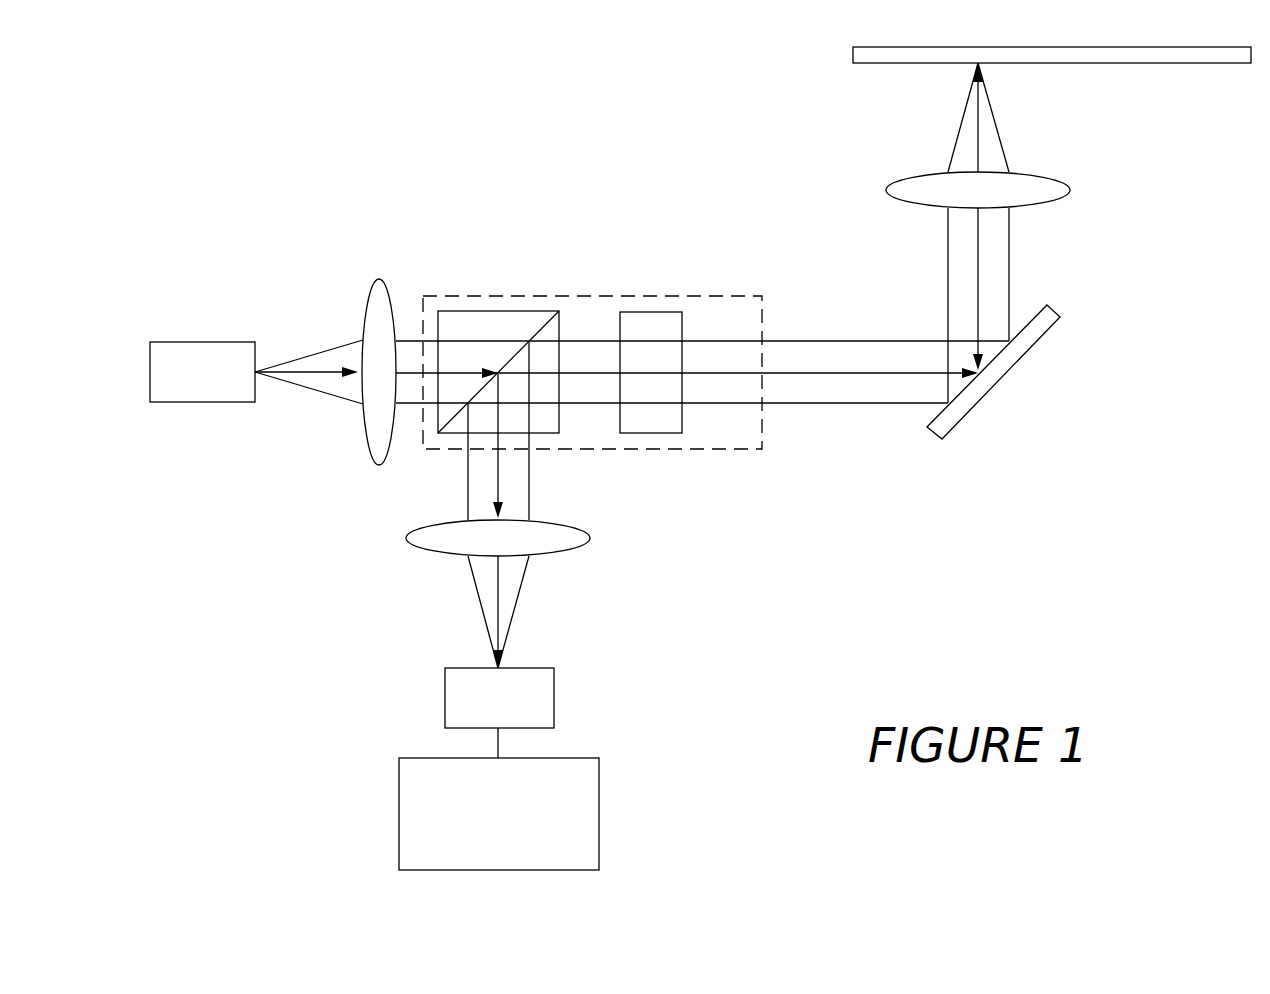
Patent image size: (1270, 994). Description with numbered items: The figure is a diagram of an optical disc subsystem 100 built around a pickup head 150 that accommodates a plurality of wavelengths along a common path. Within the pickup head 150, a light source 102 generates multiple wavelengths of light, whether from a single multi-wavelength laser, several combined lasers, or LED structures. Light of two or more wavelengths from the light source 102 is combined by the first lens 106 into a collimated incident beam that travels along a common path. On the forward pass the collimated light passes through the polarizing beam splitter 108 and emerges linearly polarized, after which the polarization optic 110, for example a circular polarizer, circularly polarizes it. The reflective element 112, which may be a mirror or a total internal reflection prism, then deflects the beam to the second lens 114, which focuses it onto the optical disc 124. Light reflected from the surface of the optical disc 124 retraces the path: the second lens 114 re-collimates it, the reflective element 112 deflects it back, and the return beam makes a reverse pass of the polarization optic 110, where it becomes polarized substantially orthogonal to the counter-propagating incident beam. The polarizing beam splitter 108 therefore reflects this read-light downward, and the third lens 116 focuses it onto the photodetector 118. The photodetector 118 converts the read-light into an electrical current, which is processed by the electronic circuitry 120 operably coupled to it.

The optical disc subsystem 100 is at (830, 566).
The light source 102 is at (206, 344).
The first lens 106 is at (405, 345).
The polarizing beam splitter 108 is at (503, 345).
The polarization optic 110 is at (670, 345).
The reflective element 112 is at (1023, 348).
The second lens 114 is at (1002, 171).
The third lens 116 is at (532, 519).
The photodetector 118 is at (533, 686).
The electronic circuitry 120 is at (530, 788).
The optical disc 124 is at (895, 63).
The pickup head 150 is at (592, 372).